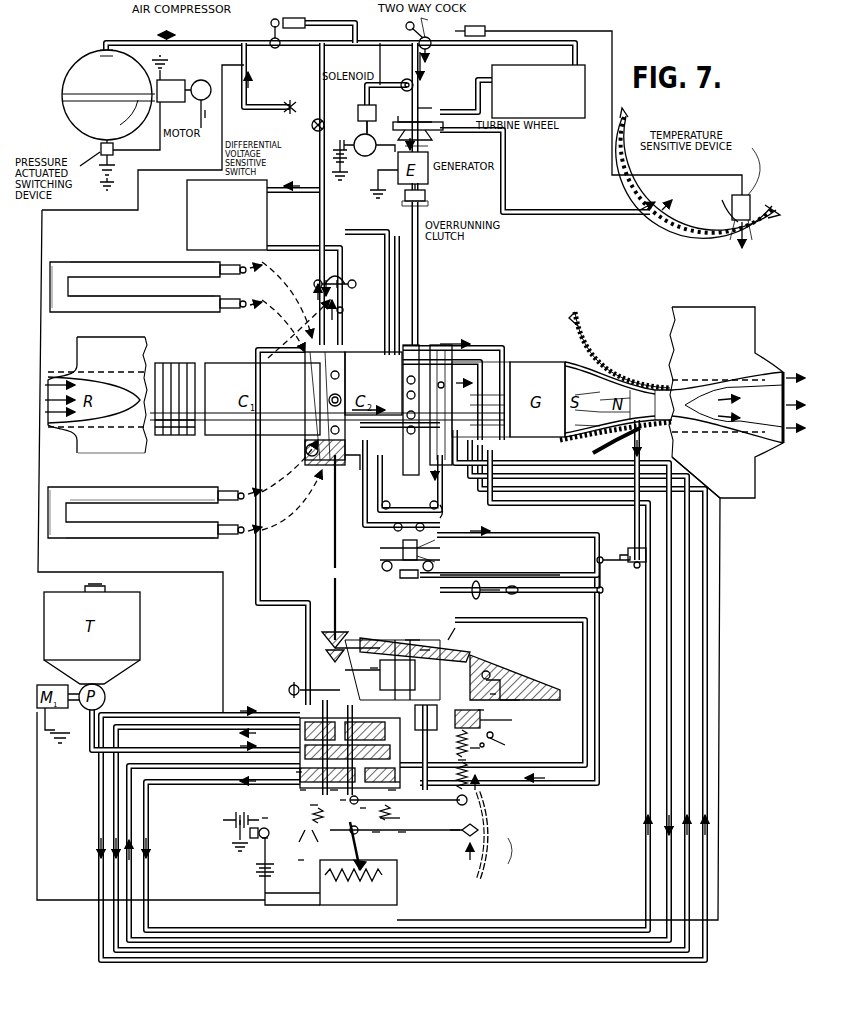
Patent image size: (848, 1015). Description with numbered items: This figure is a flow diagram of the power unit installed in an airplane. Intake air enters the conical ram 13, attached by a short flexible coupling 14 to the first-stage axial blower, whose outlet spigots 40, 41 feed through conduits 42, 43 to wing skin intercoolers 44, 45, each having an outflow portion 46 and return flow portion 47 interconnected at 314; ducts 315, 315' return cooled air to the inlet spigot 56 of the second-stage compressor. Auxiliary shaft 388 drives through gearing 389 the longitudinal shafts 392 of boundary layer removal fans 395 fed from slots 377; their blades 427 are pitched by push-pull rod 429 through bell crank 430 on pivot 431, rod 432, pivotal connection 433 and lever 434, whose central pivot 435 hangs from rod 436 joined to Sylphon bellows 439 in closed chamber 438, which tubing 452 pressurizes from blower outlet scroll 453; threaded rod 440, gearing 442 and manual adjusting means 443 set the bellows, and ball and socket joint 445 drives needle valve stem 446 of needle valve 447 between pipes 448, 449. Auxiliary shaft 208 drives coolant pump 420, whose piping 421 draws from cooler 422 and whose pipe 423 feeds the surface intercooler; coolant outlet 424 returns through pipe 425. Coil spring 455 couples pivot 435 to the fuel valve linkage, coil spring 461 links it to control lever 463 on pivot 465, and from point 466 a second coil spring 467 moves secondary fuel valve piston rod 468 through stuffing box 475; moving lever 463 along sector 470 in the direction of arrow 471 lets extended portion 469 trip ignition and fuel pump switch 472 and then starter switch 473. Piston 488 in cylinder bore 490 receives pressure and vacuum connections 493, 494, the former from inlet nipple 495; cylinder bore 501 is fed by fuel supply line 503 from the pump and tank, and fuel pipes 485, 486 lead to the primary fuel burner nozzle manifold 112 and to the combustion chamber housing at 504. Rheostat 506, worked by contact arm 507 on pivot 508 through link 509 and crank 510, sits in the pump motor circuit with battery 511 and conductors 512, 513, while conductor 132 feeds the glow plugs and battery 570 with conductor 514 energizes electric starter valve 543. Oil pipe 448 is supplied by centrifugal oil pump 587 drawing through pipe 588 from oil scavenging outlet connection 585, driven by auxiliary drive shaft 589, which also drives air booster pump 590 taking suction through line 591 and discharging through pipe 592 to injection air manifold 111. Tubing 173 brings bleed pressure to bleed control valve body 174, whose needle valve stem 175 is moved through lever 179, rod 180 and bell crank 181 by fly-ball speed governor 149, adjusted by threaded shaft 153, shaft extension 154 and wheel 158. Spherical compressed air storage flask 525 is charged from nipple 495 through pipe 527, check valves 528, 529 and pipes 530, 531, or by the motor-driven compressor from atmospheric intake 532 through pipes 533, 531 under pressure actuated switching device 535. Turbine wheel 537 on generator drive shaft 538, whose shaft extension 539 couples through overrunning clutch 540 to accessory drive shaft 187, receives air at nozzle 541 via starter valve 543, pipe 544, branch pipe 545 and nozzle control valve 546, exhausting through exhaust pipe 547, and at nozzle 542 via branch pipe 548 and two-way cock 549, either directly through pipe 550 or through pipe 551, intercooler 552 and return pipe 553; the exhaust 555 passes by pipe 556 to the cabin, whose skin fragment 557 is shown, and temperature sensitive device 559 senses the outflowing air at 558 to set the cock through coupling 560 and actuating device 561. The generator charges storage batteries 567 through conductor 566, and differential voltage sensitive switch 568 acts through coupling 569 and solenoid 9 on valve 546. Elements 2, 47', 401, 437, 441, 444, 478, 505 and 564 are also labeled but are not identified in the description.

The rotor shaft 2 is at (464, 372).
The solenoid 9 is at (358, 104).
The conical ram 13 is at (118, 366).
The short flexible coupling 14 is at (176, 363).
The axial blower outlet spigot 40 is at (315, 352).
The axial blower outlet spigot 41 is at (305, 457).
The conduit 42 is at (244, 276).
The conduit 43 is at (243, 492).
The wing skin intercooler 44 is at (137, 295).
The wing skin intercooler 45 is at (127, 519).
The outflow portion 46 is at (165, 312).
The return flow portion 47 is at (142, 254).
The heat exchanger tube 47' is at (140, 545).
The inlet spigot 56 is at (358, 457).
The injection air manifold 111 is at (403, 392).
The primary fuel burner nozzle manifold 112 is at (436, 386).
The conductor 132 is at (718, 899).
The fly-ball speed governor 149 is at (403, 552).
The threaded shaft 153 is at (520, 584).
The shaft extension 154 is at (508, 586).
The wheel 158 is at (476, 592).
The tubing 173 is at (639, 447).
The bleed control valve body 174 is at (623, 551).
The needle valve stem 175 is at (636, 566).
The lever 179 is at (606, 585).
The rod 180 is at (552, 574).
The bell crank 181 is at (416, 577).
The accessory drive shaft 187 is at (419, 290).
The auxiliary shaft 208 is at (337, 284).
The interconnection 314 is at (64, 282).
The duct 315 is at (241, 276).
The duct 315' is at (240, 519).
The boundary layer removal slot 377 is at (462, 627).
The auxiliary shaft 388 is at (335, 550).
The geared connection 389 is at (351, 646).
The longitudinally positioned shaft 392 is at (365, 668).
The boundary layer removal fan 395 is at (425, 650).
The nozzle control unit 401 is at (345, 671).
The centrifugal coolant circulating pump 420 is at (343, 279).
The piping 421 is at (303, 296).
The cooler 422 is at (235, 223).
The pipe 423 is at (350, 303).
The coolant outlet 424 is at (387, 250).
The pipe 425 is at (290, 193).
The fan blades 427 is at (412, 640).
The push-pull rod 429 is at (495, 660).
The bell crank 430 is at (505, 672).
The pivot 431 is at (497, 667).
The rod 432 is at (504, 696).
The pivotal connection 433 is at (505, 745).
The lever 434 is at (493, 748).
The central pivot 435 is at (480, 755).
The rod 436 is at (495, 735).
The piston 437 is at (408, 786).
The closed chamber 438 is at (492, 703).
The Sylphon bellows 439 is at (508, 713).
The threaded adjustable rod 440 is at (447, 713).
The spring 441 is at (453, 775).
The gearing 442 is at (523, 699).
The manual adjusting means 443 is at (290, 690).
The spring seat 444 is at (453, 753).
The ball and socket joint 445 is at (451, 743).
The needle valve stem 446 is at (362, 814).
The needle valve 447 is at (351, 804).
The pipe 448 is at (599, 778).
The pipe 449 is at (283, 527).
The tubing 452 is at (575, 760).
The axial blower outlet scroll 453 is at (305, 442).
The coil spring 455 is at (458, 798).
The coil spring 461 is at (404, 826).
The control lever 463 is at (455, 833).
The pivot 465 is at (310, 839).
The attachment point 466 is at (405, 802).
The second coil spring 467 is at (307, 816).
The secondary fuel valve piston rod 468 is at (305, 806).
The extended portion 469 is at (293, 861).
The sector 470 is at (514, 843).
The arrow 471 is at (466, 866).
The ignition and fuel pump switch 472 is at (270, 840).
The starter switch 473 is at (268, 812).
The stuffing box 475 is at (401, 794).
The piston 478 is at (338, 794).
The fuel pipe 485 is at (176, 714).
The fuel supply line 486 is at (172, 726).
The piston 488 is at (287, 772).
The cylinder bore 490 is at (294, 788).
The pressure pipe connection 493 is at (160, 771).
The vacuum pipe connection 494 is at (148, 838).
The inlet nipple 495 is at (410, 346).
The cylinder bore 501 is at (345, 744).
The fuel supply pipe line 503 is at (186, 733).
The combustion chamber housing connection 504 is at (405, 380).
The pipe 505 is at (456, 391).
The rheostat 506 is at (353, 880).
The movable contact arm 507 is at (352, 858).
The pivot 508 is at (344, 835).
The link 509 is at (402, 838).
The crank 510 is at (378, 838).
The battery 511 is at (258, 870).
The conductor 512 is at (312, 893).
The conductor 513 is at (151, 813).
The conductor 514 is at (223, 648).
The compressed air storage flask 525 is at (108, 95).
The pipe 527 is at (399, 260).
The check valve 528 is at (306, 126).
The check valve 529 is at (284, 110).
The pipe 530 is at (267, 75).
The pipe 531 is at (207, 75).
The atmospheric intake 532 is at (182, 104).
The pipe 533 is at (202, 80).
The pressure actuated switching device 535 is at (102, 150).
The turbine wheel 537 is at (444, 127).
The drive shaft 538 is at (428, 147).
The shaft extension 539 is at (430, 186).
The overrunning clutch 540 is at (428, 197).
The nozzle 541 is at (402, 120).
The nozzle 542 is at (428, 120).
The electric starter valve 543 is at (272, 32).
The pipe 544 is at (380, 47).
The branch pipe 545 is at (397, 65).
The nozzle control valve 546 is at (402, 84).
The exhaust pipe 547 is at (403, 131).
The branch pipe 548 is at (406, 28).
The two-way cock 549 is at (432, 45).
The pipe 550 is at (429, 60).
The pipe 551 is at (515, 46).
The intercooler 552 is at (545, 91).
The return pipe 553 is at (478, 80).
The exhaust 555 is at (452, 136).
The pipe 556 is at (612, 215).
The cabin skin fragment 557 is at (648, 232).
The outflowing air 558 is at (739, 241).
The temperature sensitive device 559 is at (750, 205).
The coupling 560 is at (678, 174).
The actuating device 561 is at (486, 30).
The pipe 564 is at (508, 536).
The conductor 566 is at (354, 142).
The storage batteries 567 is at (343, 166).
The differential voltage sensitive switch 568 is at (357, 135).
The coupling 569 is at (358, 125).
The battery 570 is at (234, 818).
The oil scavenging outlet connection 585 is at (346, 424).
The centrifugal oil pump 587 is at (412, 528).
The pipe 588 is at (370, 530).
The auxiliary drive shaft 589 is at (429, 497).
The centrifugal air booster pump 590 is at (410, 495).
The line 591 is at (410, 482).
The pipe 592 is at (426, 466).